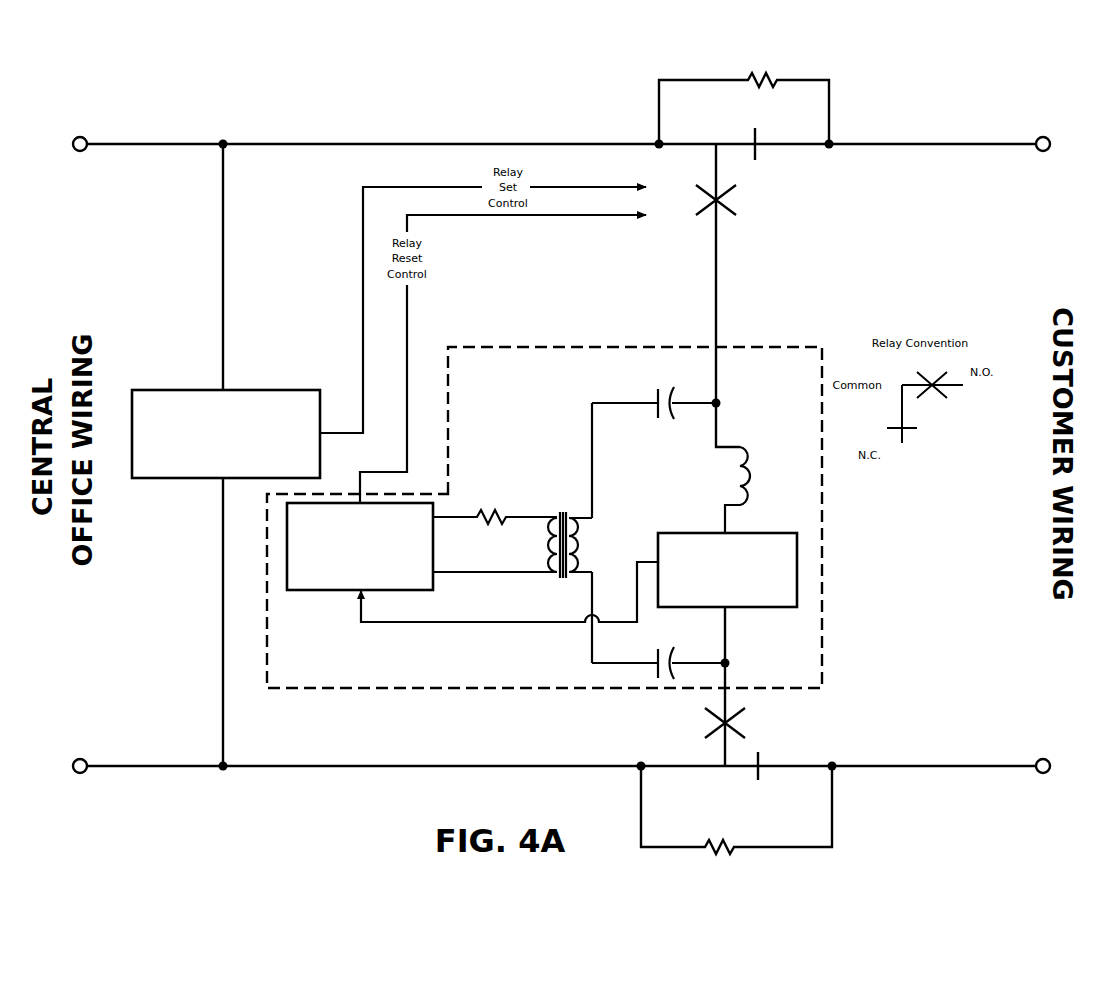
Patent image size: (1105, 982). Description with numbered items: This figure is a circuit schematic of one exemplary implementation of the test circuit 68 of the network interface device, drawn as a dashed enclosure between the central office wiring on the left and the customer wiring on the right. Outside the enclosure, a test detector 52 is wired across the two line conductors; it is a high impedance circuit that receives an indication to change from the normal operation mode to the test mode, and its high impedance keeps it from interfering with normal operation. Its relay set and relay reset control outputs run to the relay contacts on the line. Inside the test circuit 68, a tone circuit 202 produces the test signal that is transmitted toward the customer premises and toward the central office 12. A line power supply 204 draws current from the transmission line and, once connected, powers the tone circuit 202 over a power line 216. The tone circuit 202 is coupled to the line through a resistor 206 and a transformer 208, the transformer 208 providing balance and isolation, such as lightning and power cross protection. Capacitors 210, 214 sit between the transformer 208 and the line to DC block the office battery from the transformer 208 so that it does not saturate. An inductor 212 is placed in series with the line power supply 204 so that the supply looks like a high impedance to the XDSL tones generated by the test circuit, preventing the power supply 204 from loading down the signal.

The test detector 52 is at (226, 434).
The test circuit 68 is at (447, 372).
The tone circuit 202 is at (360, 546).
The line power supply 204 is at (727, 570).
The resistor 206 is at (503, 517).
The transformer 208 is at (580, 560).
The central office 12 is at (561, 530).
The capacitor 210 is at (655, 396).
The inductor 212 is at (750, 470).
The capacitor 214 is at (656, 660).
The power line 216 is at (475, 621).